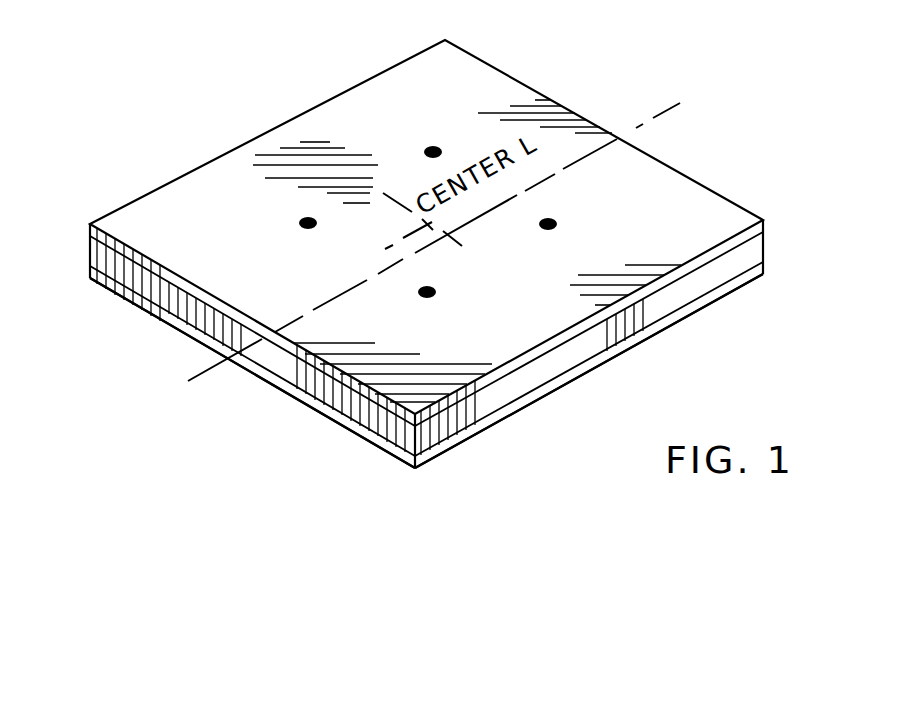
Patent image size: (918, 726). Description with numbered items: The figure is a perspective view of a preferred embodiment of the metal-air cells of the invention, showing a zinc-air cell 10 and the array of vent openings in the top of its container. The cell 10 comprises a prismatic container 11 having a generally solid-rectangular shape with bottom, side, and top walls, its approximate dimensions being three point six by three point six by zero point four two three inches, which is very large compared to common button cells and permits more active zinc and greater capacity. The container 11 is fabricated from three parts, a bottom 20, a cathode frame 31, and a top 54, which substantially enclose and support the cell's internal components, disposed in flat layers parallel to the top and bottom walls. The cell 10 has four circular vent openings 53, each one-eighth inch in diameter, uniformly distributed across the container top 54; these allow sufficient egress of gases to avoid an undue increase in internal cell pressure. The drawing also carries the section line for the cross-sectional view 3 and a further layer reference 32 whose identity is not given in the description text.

The zinc-air cell 10 is at (134, 154).
The prismatic container 11 is at (138, 195).
The bottom 20 is at (415, 468).
The cathode frame 31 is at (764, 251).
The lower core layer 32 is at (708, 285).
The vent openings 53 is at (434, 148).
The top 54 is at (712, 197).
The section line 3- 3 is at (648, 101).